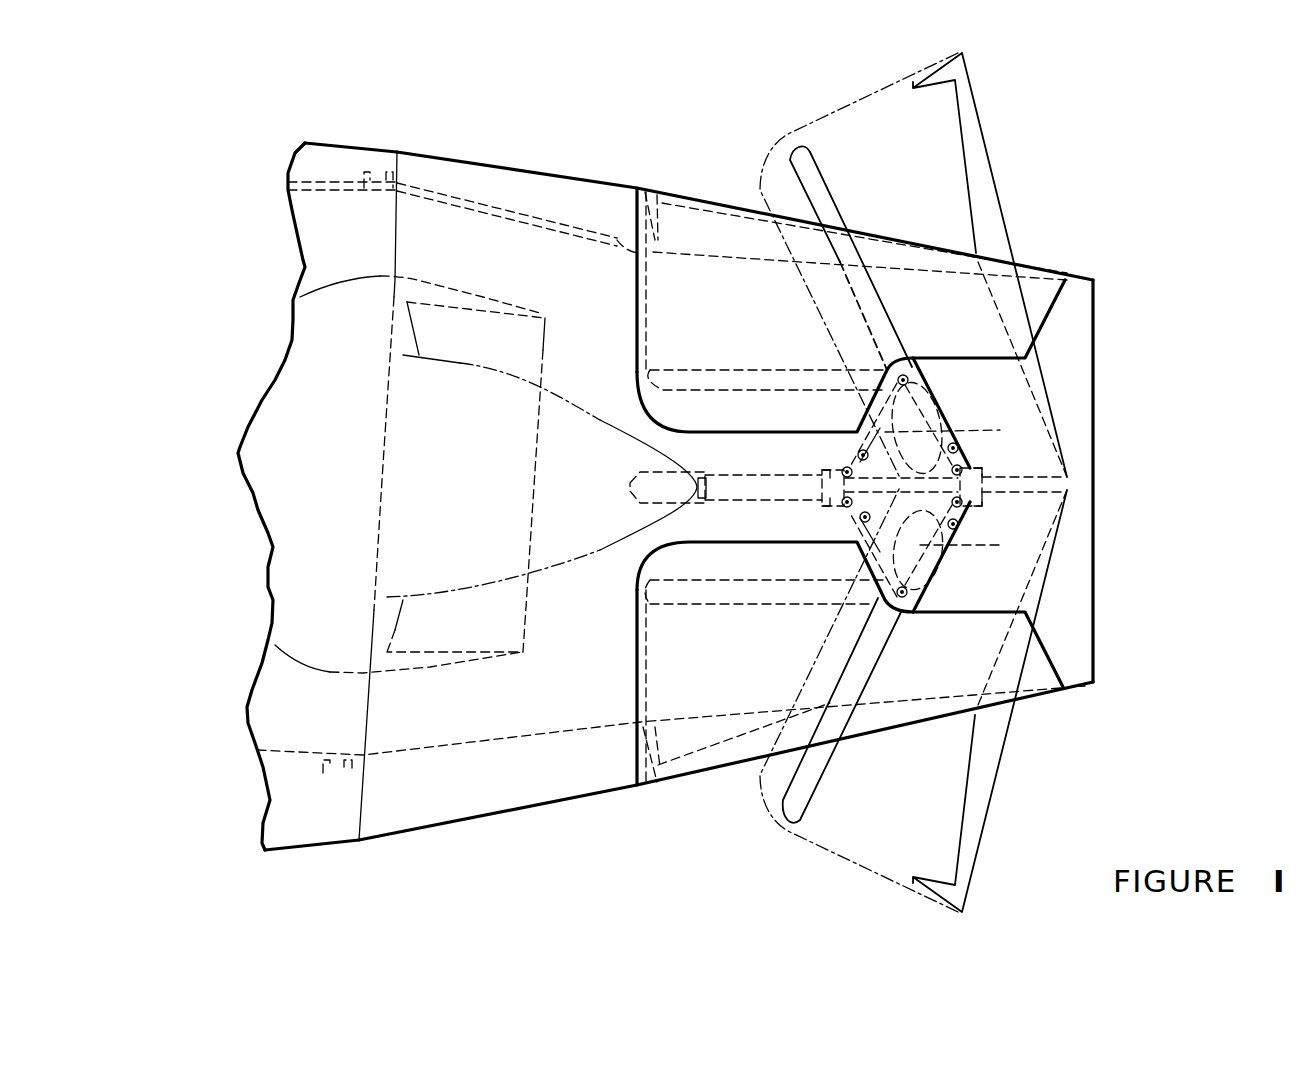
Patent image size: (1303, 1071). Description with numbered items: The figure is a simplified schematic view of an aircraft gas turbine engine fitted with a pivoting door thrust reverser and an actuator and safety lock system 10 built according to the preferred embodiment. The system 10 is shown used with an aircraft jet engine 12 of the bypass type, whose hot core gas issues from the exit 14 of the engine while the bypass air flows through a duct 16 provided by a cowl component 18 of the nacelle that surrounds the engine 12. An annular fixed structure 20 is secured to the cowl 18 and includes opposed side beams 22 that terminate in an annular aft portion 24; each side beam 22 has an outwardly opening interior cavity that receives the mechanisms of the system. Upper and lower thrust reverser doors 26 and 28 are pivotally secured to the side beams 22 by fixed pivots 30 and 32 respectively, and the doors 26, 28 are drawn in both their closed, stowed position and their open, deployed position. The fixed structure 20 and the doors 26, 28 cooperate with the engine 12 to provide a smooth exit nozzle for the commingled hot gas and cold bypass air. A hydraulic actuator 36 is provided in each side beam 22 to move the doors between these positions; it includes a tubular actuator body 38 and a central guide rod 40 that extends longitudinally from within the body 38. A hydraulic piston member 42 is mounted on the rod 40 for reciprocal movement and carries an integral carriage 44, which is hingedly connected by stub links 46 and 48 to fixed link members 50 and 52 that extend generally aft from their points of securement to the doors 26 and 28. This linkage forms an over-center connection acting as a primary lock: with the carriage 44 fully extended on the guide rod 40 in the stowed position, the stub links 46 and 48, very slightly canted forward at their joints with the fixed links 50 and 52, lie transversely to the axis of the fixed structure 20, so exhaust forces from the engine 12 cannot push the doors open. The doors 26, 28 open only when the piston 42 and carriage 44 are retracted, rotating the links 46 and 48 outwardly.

The actuator and safety lock system 10 is at (638, 552).
The aircraft jet engine 12 is at (288, 432).
The exit 14 is at (546, 340).
The duct 16 is at (326, 190).
The cowl component 18 is at (347, 140).
The annular fixed structure 20 is at (524, 160).
The side beams 22 is at (772, 545).
The annular aft portion 24 is at (1096, 310).
The upper thrust reverser door 26 is at (697, 190).
The lower thrust reverser door 28 is at (700, 778).
The fixed pivot 30 is at (907, 362).
The fixed pivot 32 is at (920, 614).
The hydraulic actuator 36 is at (806, 463).
The tubular actuator body 38 is at (766, 510).
The central guide rod 40 is at (938, 412).
The hydraulic piston member 42 is at (836, 510).
The integral carriage 44 is at (922, 487).
The stub link 46 is at (975, 457).
The stub link 48 is at (972, 505).
The fixed link member 50 is at (860, 405).
The fixed link member 52 is at (935, 580).